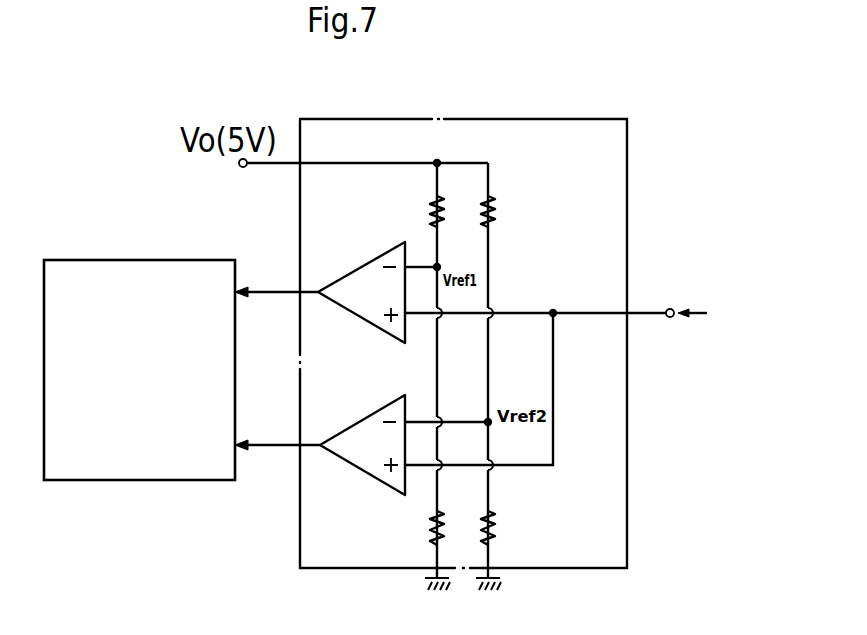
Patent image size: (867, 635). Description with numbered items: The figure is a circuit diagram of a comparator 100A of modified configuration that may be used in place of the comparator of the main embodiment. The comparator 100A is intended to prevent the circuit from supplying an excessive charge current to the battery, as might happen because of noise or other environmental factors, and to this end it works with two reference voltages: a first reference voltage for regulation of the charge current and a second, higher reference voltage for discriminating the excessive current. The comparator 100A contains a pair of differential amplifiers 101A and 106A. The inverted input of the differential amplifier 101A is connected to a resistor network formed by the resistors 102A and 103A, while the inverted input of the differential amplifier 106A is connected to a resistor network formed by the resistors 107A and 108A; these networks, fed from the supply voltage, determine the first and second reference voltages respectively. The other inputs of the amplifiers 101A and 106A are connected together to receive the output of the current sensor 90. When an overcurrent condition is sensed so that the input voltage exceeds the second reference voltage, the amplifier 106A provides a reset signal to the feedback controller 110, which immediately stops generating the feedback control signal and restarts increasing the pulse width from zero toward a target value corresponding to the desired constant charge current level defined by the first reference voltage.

The comparator 100A is at (592, 118).
The differential amplifier 101A is at (362, 265).
The resistor 102A is at (433, 203).
The resistor 103A is at (432, 531).
The differential amplifier 106A is at (358, 470).
The resistor 107A is at (492, 204).
The resistor 108A is at (496, 524).
The feedback controller 110 is at (80, 481).
The current sensor 90 is at (730, 338).